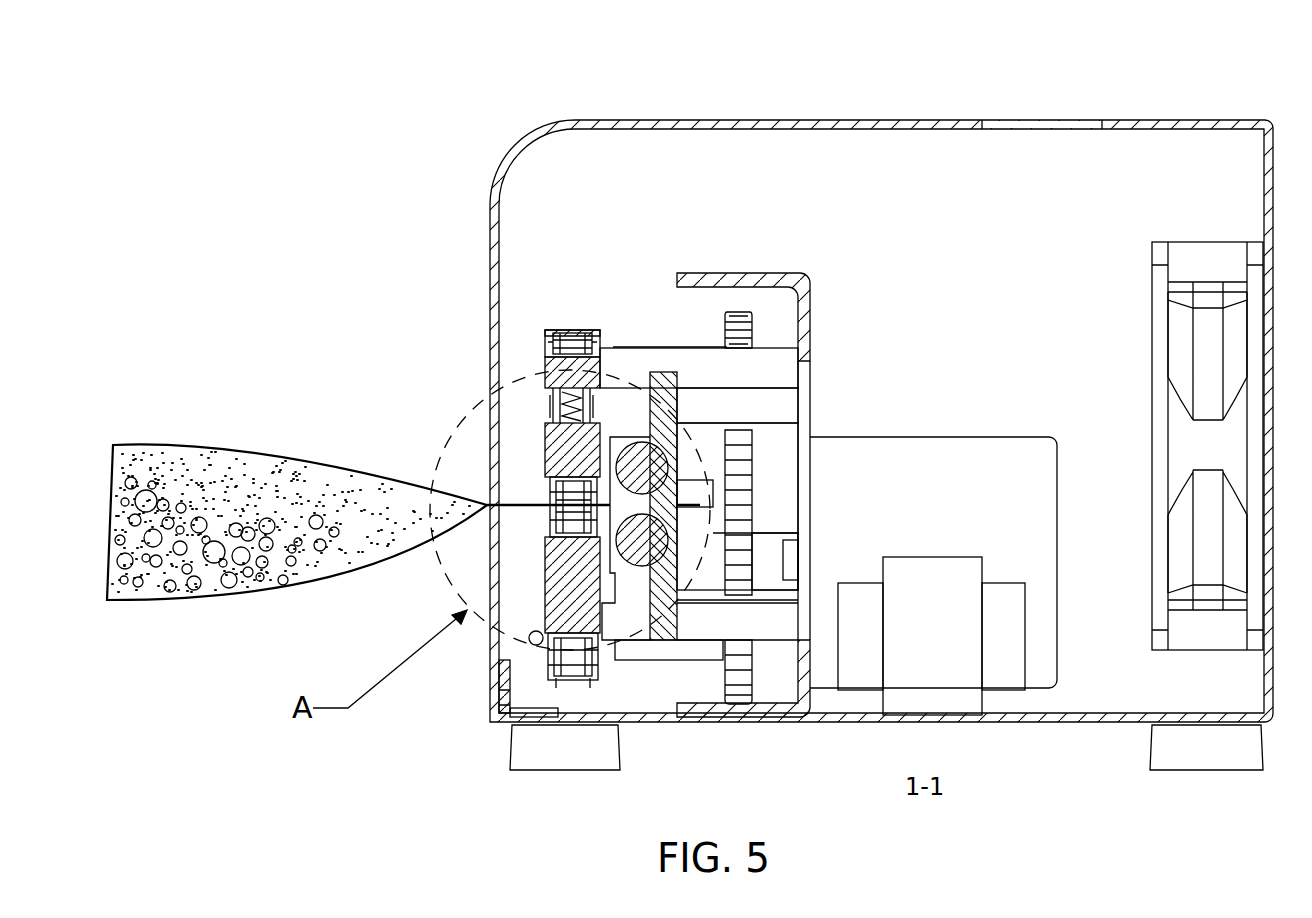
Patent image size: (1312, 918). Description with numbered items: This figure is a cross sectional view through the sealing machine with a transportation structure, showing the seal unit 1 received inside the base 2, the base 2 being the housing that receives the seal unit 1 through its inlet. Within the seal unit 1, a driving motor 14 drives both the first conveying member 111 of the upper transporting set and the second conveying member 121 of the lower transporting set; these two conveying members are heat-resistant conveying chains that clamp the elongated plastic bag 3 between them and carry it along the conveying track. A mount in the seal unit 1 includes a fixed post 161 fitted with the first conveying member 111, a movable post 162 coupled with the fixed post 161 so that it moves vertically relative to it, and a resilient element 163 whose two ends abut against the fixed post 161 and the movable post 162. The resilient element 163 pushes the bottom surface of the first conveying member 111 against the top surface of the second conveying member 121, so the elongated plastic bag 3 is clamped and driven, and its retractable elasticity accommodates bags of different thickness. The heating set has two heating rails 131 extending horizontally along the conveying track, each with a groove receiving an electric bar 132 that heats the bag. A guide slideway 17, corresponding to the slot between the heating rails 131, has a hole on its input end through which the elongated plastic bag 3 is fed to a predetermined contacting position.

The seal unit 1 is at (869, 301).
The base 2 is at (1184, 118).
The elongated plastic bag 3 is at (215, 445).
The driving motor 14 is at (952, 557).
The guide slideway 17 is at (705, 440).
The first conveying member 111 is at (567, 330).
The second conveying member 121 is at (547, 672).
The heating rail 131 is at (660, 370).
The electric bar 132 is at (636, 450).
The fixed post 161 is at (545, 363).
The movable post 162 is at (545, 450).
The resilient element 163 is at (550, 400).